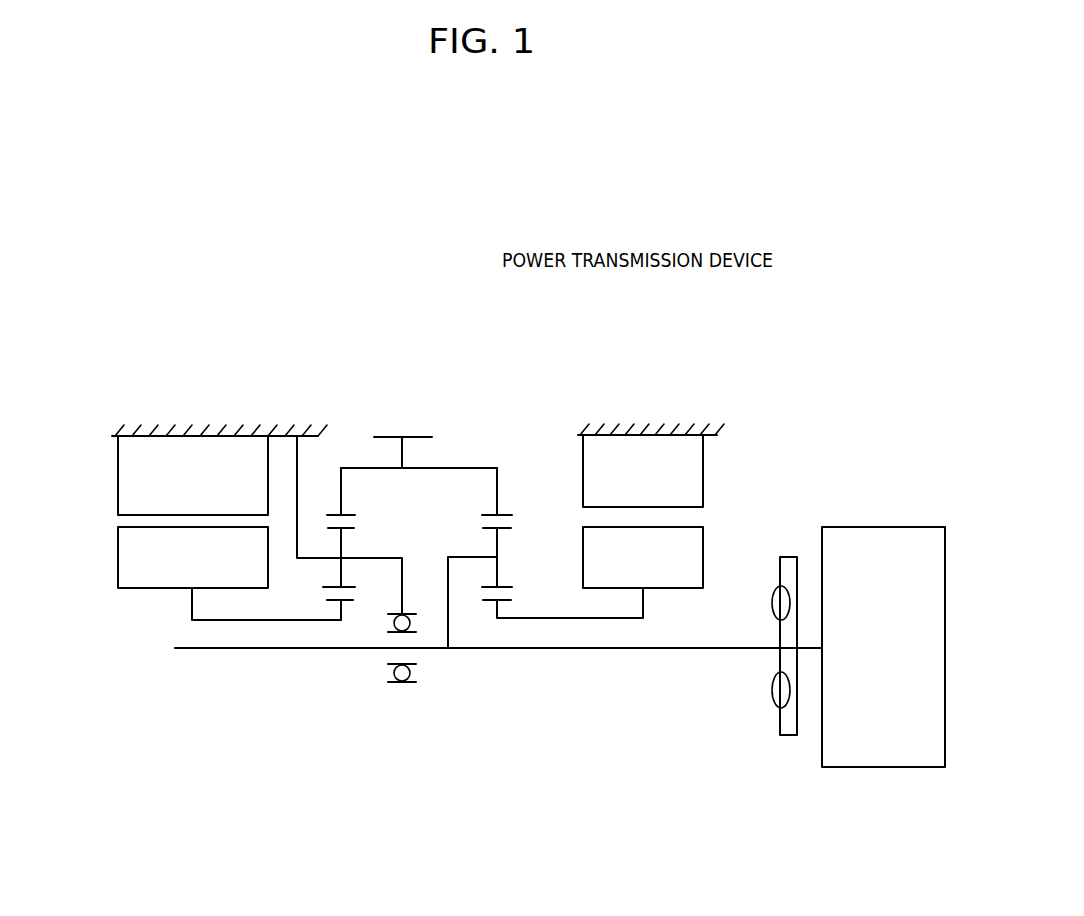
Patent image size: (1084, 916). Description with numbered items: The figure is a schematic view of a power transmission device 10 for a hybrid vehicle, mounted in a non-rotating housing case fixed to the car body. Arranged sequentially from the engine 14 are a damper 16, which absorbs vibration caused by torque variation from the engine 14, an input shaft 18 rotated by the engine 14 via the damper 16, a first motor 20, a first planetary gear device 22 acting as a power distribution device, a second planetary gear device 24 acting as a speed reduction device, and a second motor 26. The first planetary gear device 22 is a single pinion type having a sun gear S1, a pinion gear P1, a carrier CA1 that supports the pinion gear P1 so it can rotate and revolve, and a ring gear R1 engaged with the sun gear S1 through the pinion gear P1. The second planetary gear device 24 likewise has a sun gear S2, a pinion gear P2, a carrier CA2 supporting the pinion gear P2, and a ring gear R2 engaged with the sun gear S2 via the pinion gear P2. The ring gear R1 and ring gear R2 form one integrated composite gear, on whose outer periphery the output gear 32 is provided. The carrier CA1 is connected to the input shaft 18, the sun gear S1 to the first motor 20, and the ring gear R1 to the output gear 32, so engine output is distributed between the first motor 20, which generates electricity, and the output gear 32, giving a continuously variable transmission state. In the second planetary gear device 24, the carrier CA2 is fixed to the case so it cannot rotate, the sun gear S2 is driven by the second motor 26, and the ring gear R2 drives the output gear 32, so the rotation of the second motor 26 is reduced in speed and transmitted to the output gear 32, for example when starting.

The power transmission device 10 is at (590, 334).
The engine 14 is at (858, 542).
The damper 16 is at (787, 558).
The input shaft 18 is at (537, 650).
The first motor 20 is at (737, 502).
The first planetary gear device 22 is at (500, 458).
The second planetary gear device 24 is at (343, 458).
The second motor 26 is at (101, 482).
The output gear 32 is at (388, 436).
The ring gear R1 is at (510, 515).
The pinion gear P1 is at (501, 530).
The sun gear S1 is at (500, 602).
The carrier CA1 is at (462, 557).
The ring gear R2 is at (344, 515).
The pinion gear P2 is at (326, 588).
The sun gear S2 is at (352, 601).
The carrier CA2 is at (365, 557).